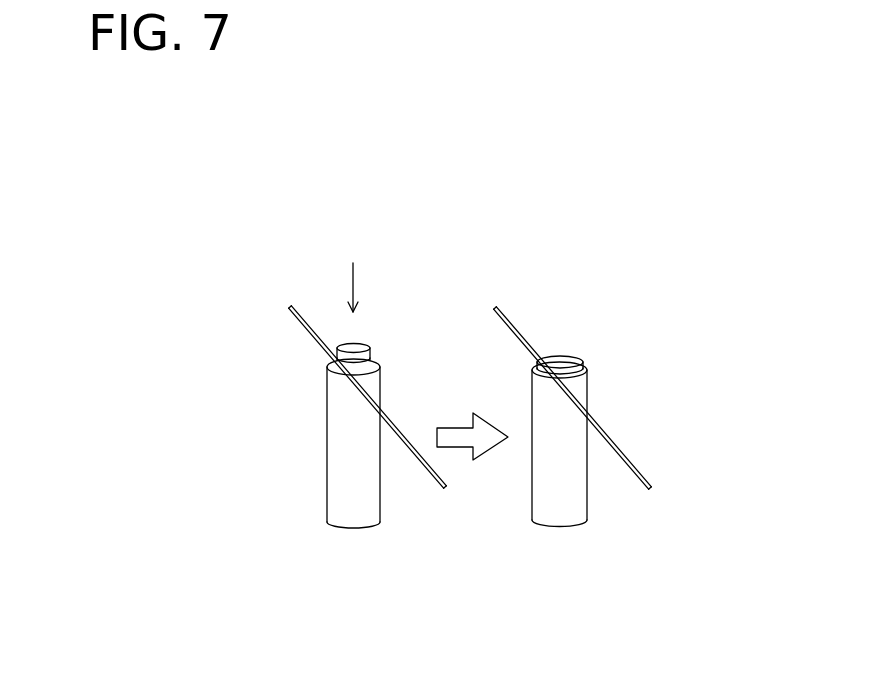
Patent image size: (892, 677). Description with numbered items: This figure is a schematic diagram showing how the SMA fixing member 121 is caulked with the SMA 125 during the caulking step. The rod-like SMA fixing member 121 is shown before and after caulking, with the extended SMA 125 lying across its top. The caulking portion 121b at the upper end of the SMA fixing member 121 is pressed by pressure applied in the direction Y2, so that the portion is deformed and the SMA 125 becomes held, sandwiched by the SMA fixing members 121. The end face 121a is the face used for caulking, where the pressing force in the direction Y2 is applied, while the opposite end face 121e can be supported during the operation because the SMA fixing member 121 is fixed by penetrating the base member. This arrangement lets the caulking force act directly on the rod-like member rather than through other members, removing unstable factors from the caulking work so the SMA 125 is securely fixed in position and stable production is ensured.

The SMA fixing member 121 is at (360, 225).
The end face 121a is at (355, 347).
The caulking portion 121b is at (369, 355).
The end face 121e is at (348, 527).
The SMA 125 is at (308, 332).
The direction Y2 is at (331, 286).